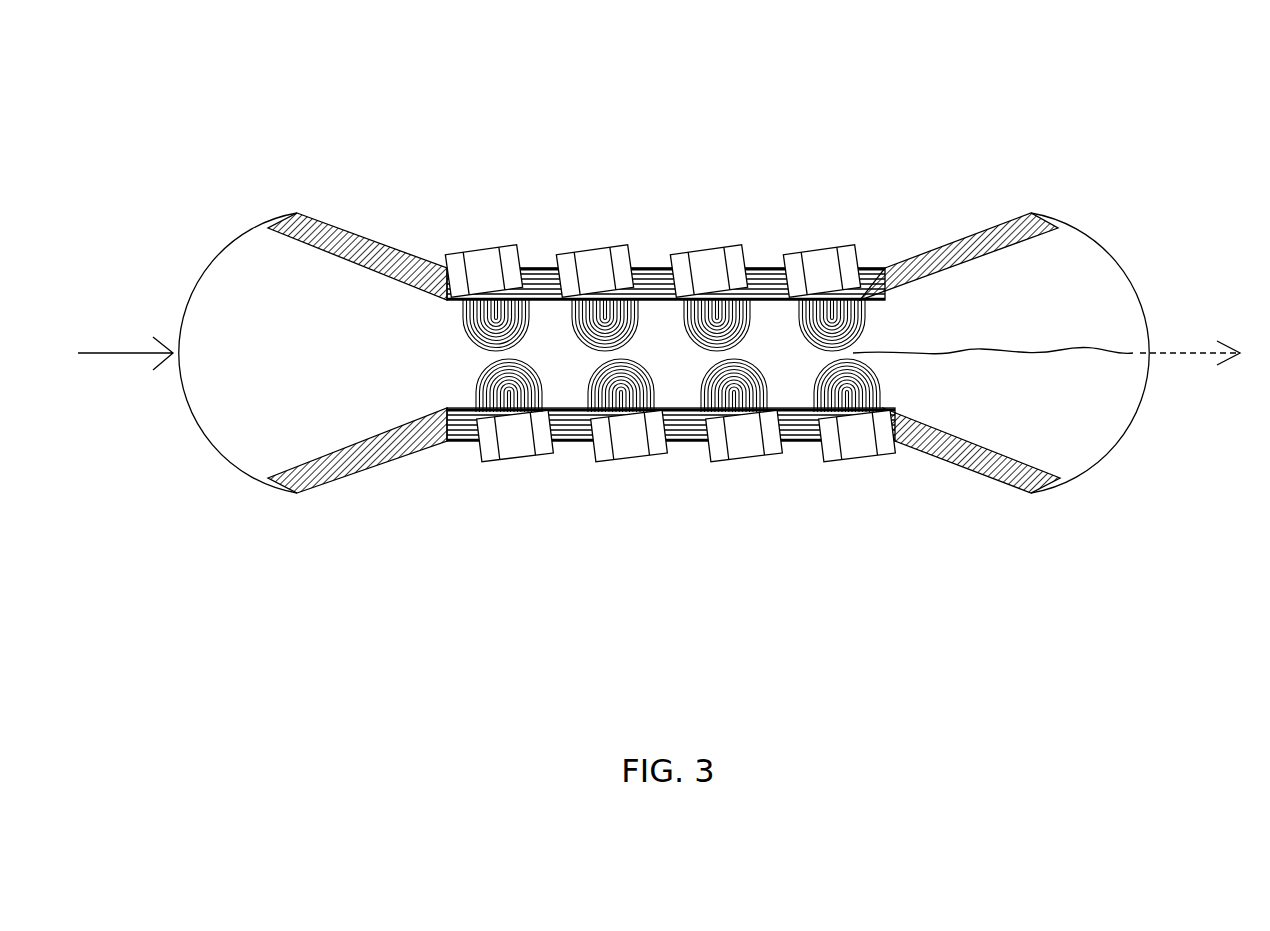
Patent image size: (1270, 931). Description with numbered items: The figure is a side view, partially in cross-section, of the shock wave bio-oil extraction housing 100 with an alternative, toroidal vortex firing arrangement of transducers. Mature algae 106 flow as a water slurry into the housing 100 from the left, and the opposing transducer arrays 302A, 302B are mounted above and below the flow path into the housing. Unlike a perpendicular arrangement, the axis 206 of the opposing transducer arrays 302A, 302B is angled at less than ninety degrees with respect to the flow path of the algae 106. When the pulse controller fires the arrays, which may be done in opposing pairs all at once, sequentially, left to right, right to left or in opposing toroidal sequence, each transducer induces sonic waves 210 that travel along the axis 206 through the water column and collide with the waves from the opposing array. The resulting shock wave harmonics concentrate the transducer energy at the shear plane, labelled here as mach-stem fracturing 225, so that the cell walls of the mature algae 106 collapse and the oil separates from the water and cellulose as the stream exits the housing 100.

The shock wave bio-oil extraction housing 100 is at (650, 326).
The mature algae 106 is at (313, 378).
The sonic waves 210 is at (470, 320).
The opposing transducer array 302A is at (820, 247).
The opposing transducer array 302B is at (686, 506).
The axis 206 is at (500, 460).
The mach-stem fracturing 225 is at (1120, 292).